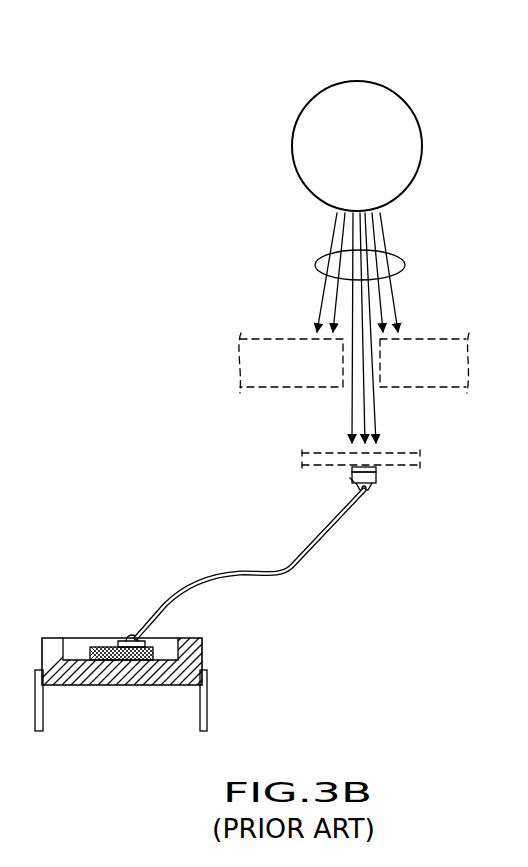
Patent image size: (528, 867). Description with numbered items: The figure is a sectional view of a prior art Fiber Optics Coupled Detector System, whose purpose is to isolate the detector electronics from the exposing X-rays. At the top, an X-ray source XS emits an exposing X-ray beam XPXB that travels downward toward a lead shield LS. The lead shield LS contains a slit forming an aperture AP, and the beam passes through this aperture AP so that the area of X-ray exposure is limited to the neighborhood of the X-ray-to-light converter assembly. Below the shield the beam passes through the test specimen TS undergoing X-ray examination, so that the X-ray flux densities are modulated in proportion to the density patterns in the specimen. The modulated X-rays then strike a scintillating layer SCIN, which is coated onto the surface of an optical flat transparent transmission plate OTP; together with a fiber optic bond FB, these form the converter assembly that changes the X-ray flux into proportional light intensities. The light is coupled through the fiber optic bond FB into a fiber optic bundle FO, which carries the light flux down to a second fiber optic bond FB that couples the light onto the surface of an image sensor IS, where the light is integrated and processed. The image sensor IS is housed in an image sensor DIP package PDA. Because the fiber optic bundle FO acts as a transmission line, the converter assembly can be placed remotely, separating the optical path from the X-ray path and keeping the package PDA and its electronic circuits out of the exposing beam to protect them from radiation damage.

The X-ray source XS is at (377, 80).
The exposing X-ray beam XPXB is at (320, 260).
The lead shield LS is at (262, 338).
The aperture AP is at (374, 386).
The test specimen TS is at (320, 453).
The scintillating layer SCIN is at (378, 469).
The optical flat transparent transmission plate OTP is at (378, 486).
The fiber optic bond FB is at (352, 479).
The fiber optic bundle FO is at (238, 571).
The image sensor IS is at (98, 645).
The image sensor DIP package PDA is at (202, 658).